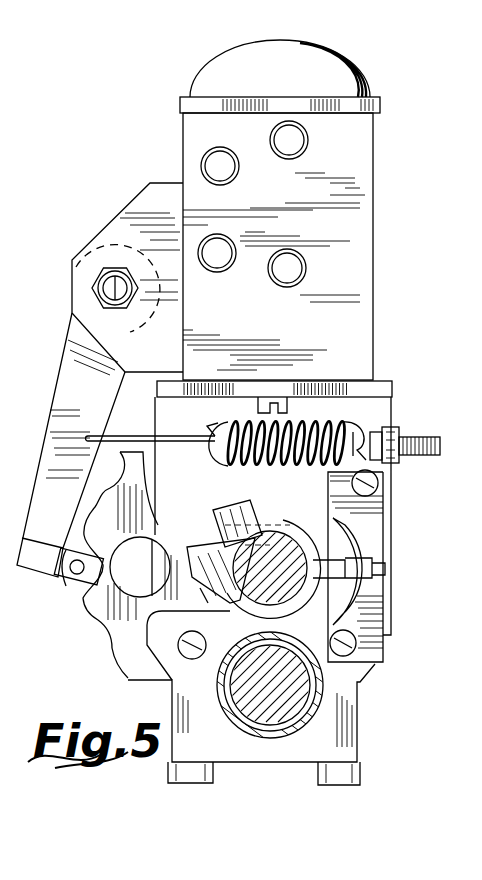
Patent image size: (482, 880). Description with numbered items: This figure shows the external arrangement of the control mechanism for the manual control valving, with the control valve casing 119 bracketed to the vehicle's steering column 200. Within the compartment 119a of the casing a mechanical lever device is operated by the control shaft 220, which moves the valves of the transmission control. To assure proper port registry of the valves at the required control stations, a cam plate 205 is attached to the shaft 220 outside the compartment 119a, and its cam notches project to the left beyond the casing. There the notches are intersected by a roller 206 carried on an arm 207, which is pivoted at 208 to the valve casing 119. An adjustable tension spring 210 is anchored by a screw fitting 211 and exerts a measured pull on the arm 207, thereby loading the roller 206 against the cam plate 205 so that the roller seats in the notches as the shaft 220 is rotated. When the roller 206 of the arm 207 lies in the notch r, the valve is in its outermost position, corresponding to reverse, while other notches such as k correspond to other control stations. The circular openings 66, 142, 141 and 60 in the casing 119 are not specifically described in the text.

The control valve casing 119 is at (376, 233).
The compartment 119a is at (180, 402).
The port opening 66 is at (308, 141).
The port opening 142 is at (201, 165).
The port opening 141 is at (217, 272).
The port opening 60 is at (284, 287).
The arm 207 is at (58, 399).
The pivot 208 is at (98, 288).
The roller 206 is at (72, 586).
The adjustable tension spring 210 is at (212, 461).
The screw fitting 211 is at (394, 432).
The cam plate 205 is at (170, 532).
The control shaft 220 is at (283, 543).
The steering column 200 is at (245, 703).
The cam profile k is at (125, 660).
The notch r is at (122, 467).